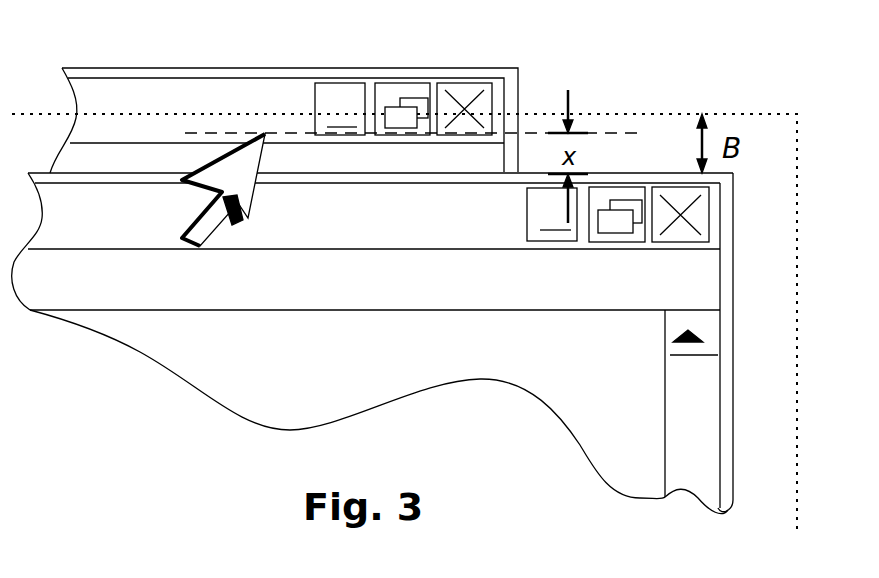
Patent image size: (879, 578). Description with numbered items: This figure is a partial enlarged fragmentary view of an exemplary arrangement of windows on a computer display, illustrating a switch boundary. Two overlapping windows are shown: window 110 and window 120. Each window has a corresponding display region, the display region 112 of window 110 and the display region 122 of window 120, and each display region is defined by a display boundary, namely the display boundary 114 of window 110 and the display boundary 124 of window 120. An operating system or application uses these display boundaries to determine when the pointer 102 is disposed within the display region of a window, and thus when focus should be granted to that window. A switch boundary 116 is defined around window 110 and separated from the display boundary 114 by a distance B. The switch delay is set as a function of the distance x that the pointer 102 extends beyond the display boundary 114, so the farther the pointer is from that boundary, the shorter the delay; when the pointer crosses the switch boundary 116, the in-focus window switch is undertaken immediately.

The pointer 102 is at (249, 218).
The window 110 is at (597, 422).
The display region 112 is at (559, 357).
The display boundary 114 is at (733, 388).
The switch boundary 116 is at (798, 255).
The window 120 is at (197, 93).
The display region 122 is at (283, 97).
The display boundary 124 is at (435, 68).